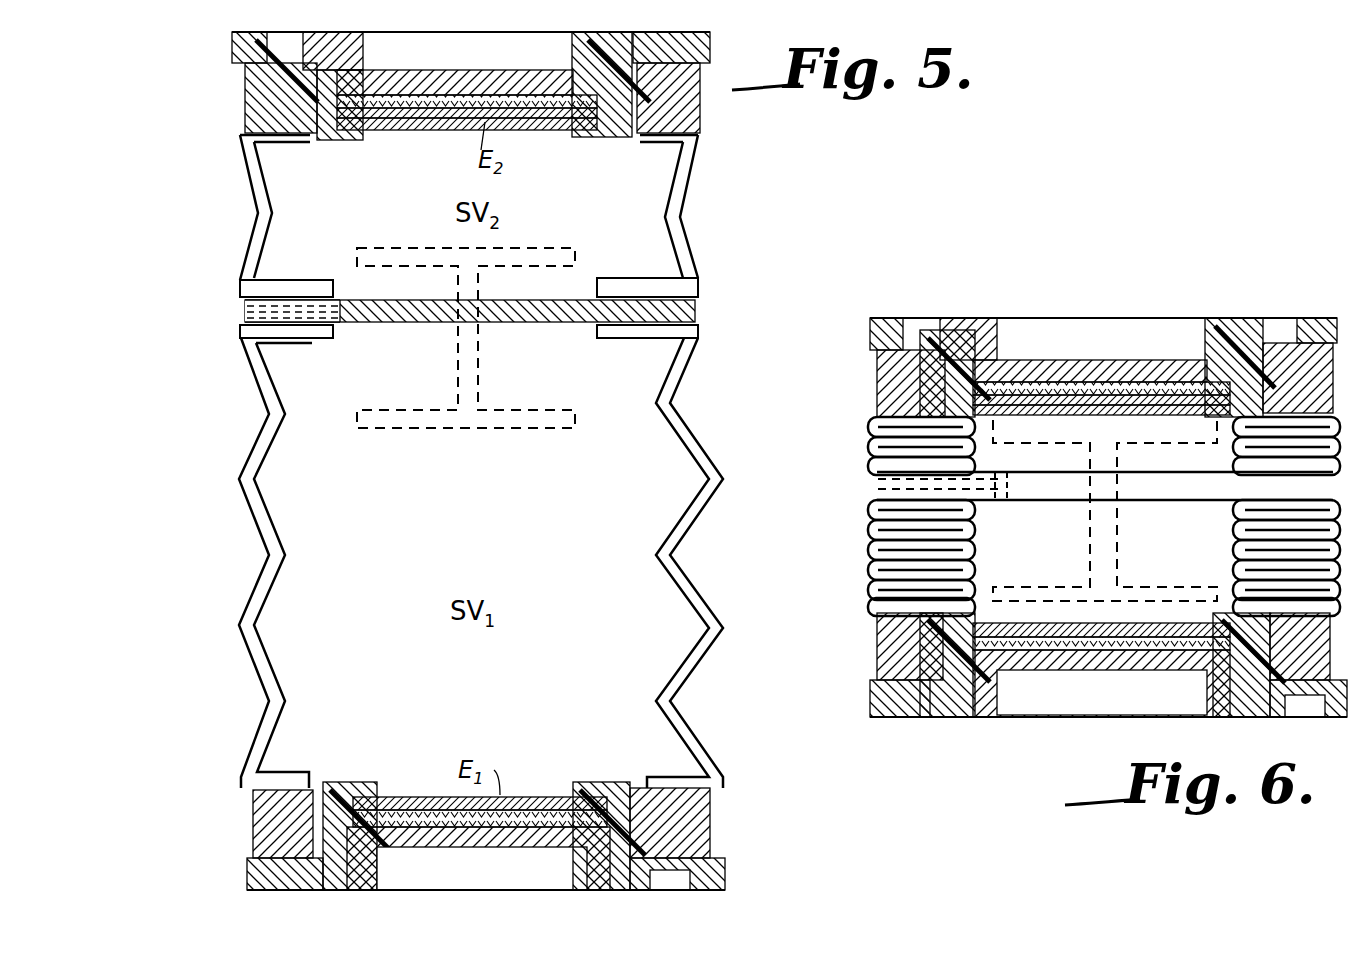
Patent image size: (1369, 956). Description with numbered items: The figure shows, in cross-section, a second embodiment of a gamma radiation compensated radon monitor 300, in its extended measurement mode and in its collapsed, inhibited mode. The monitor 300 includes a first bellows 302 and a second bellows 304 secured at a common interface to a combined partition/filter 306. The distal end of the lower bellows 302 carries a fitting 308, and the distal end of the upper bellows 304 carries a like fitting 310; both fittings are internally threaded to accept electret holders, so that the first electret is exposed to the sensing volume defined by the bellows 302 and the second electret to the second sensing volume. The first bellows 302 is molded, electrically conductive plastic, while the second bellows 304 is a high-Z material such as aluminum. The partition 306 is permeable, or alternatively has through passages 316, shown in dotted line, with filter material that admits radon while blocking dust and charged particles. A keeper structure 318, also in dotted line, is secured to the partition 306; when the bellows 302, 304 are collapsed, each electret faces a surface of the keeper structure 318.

In FIG. 5, the gamma corrected radon monitor 300 is at (232, 232).
In FIG. 6, the gamma corrected radon monitor 300 is at (833, 368).
In FIG. 5, the first bellows 302 is at (237, 624).
In FIG. 5, the second bellows 304 is at (687, 216).
In FIG. 5, the partition/filter 306 is at (695, 312).
In FIG. 5, the fitting 308 is at (712, 842).
In FIG. 6, the fitting 308 is at (878, 660).
In FIG. 5, the fitting 310 is at (258, 98).
In FIG. 6, the fitting 310 is at (888, 402).
In FIG. 5, the through passages 316 is at (343, 313).
In FIG. 5, the keeper structure 318 is at (512, 408).